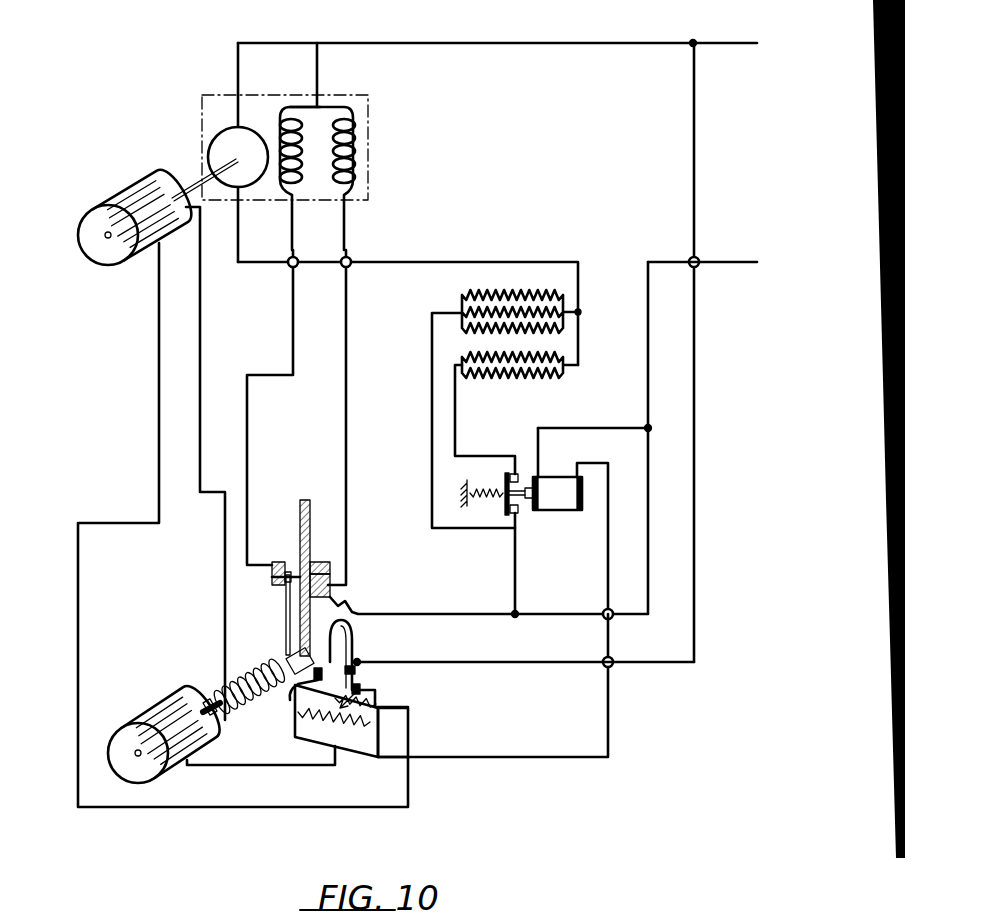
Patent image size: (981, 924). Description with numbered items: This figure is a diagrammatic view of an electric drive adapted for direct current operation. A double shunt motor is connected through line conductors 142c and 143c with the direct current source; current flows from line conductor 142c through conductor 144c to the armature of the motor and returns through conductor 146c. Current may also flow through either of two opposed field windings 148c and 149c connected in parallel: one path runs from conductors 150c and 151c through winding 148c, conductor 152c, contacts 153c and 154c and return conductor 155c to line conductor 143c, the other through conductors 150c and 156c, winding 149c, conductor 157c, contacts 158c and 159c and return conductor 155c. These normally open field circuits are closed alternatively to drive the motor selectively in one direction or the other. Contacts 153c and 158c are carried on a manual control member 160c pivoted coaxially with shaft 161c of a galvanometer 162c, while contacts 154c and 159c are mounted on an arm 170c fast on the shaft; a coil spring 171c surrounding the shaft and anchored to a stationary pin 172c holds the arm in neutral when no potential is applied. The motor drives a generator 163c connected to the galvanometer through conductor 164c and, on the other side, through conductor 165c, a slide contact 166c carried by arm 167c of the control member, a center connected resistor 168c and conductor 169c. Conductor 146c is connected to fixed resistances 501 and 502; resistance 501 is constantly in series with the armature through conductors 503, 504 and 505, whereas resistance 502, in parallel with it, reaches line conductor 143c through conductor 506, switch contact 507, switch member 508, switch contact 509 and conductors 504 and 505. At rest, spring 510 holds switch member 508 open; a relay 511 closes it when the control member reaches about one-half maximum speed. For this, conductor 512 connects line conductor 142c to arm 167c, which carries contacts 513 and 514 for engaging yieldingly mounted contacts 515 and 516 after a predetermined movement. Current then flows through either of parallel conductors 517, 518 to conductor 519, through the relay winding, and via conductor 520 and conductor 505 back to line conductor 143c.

The line conductor 142c is at (475, 43).
The line conductor 143c is at (715, 262).
The conductor 144c is at (238, 60).
The conductor 146c is at (410, 262).
The field winding 148c is at (277, 190).
The field winding 149c is at (355, 185).
The conductor 150c is at (320, 66).
The conductor 151c is at (296, 107).
The conductor 152c is at (268, 352).
The contact 153c is at (278, 563).
The contact 154c is at (286, 583).
The return conductor 155c is at (408, 614).
The conductor 156c is at (340, 105).
The conductor 157c is at (348, 332).
The contact 158c is at (333, 597).
The contact 159c is at (312, 560).
The manual control member 160c is at (302, 510).
The galvanometer shaft 161c is at (246, 708).
The galvanometer 162c is at (135, 725).
The D. C. generator 163c is at (140, 185).
The conductor 164c is at (202, 302).
The conductor 165c is at (159, 343).
The slide contact 166c is at (337, 716).
The arm 167c is at (353, 652).
The center connected resistor 168c is at (312, 728).
The conductor 169c is at (262, 765).
The arm 170c is at (285, 622).
The coil spring 171c is at (256, 672).
The stationary pin 172c is at (222, 712).
The fixed resistance 501 is at (460, 300).
The fixed resistance 502 is at (508, 376).
The conductor 503 is at (432, 405).
The conductor 504 is at (515, 578).
The conductor 505 is at (648, 350).
The conductor 506 is at (457, 420).
The switch contact 507 is at (517, 472).
The switch member 508 is at (504, 505).
The switch contact 509 is at (517, 514).
The spring 510 is at (492, 488).
The relay 511 is at (578, 512).
The conductor 512 is at (697, 452).
The contact 513 is at (315, 690).
The contact 514 is at (358, 674).
The contact 515 is at (287, 697).
The contact 516 is at (362, 690).
The conductor 517 is at (382, 707).
The conductor 518 is at (386, 760).
The conductor 519 is at (478, 757).
The conductor 520 is at (612, 428).